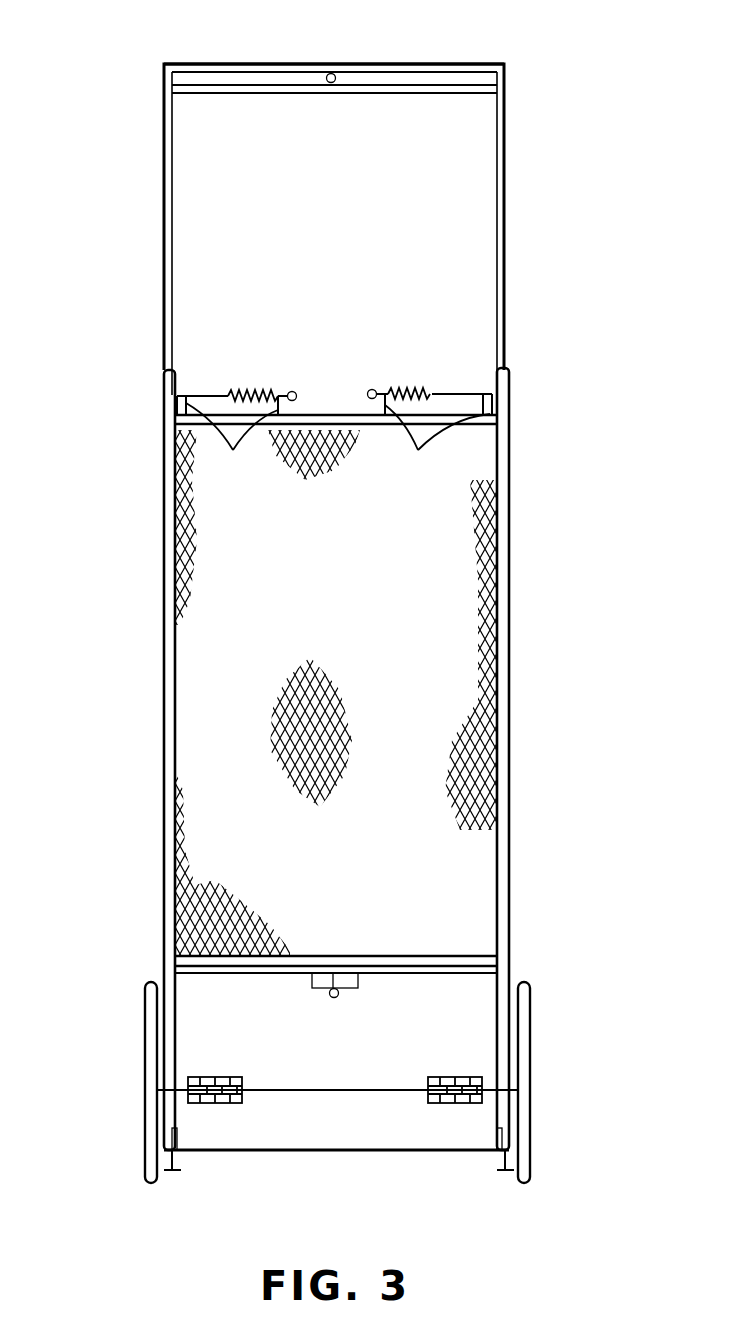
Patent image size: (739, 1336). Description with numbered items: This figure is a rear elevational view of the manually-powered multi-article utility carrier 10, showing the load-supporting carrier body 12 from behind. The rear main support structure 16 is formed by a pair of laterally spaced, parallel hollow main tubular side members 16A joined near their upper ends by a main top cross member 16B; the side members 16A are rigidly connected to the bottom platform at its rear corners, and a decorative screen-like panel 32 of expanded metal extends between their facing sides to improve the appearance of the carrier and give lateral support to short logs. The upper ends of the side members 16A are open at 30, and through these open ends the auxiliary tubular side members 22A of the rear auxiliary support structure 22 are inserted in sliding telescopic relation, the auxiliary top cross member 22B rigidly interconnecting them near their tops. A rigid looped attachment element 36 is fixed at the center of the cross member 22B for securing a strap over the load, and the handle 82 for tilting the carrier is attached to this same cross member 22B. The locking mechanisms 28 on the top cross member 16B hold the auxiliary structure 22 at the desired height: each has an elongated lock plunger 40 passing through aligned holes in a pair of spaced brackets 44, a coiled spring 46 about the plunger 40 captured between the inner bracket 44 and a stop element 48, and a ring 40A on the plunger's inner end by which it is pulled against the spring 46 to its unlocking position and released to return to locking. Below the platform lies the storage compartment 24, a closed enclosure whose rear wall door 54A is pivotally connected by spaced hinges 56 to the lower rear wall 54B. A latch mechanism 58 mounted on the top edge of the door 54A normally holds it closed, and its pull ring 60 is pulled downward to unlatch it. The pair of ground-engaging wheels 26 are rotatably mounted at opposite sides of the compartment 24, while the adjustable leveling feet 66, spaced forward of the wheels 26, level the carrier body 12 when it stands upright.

The utility carrier 10 is at (556, 118).
The carrier body 12 is at (511, 666).
The rear main support structure 16 is at (511, 571).
The main tubular side members 16A is at (164, 735).
The main top cross member 16B is at (470, 427).
The rear auxiliary support structure 22 is at (511, 241).
The auxiliary tubular side members 22A is at (173, 194).
The auxiliary top cross member 22B is at (372, 95).
The storage compartment 24 is at (302, 1153).
The ground-engaging wheels 26 is at (145, 1032).
The locking mechanisms 28 is at (371, 345).
The open upper ends 30 is at (166, 370).
The screen-like panels 32 is at (462, 804).
The attachment element 36 is at (327, 73).
The lock plunger 40 is at (199, 395).
The ring 40A is at (367, 389).
The brackets 44 is at (338, 444).
The coiled spring 46 is at (258, 394).
The stop element 48 is at (233, 392).
The rear wall door 54A is at (222, 1060).
The lower rear wall 54B is at (298, 1129).
The hinges 56 is at (213, 1077).
The latch mechanism 58 is at (311, 979).
The pull ring 60 is at (340, 994).
The leveling feet 66 is at (176, 1157).
The handle 82 is at (400, 62).